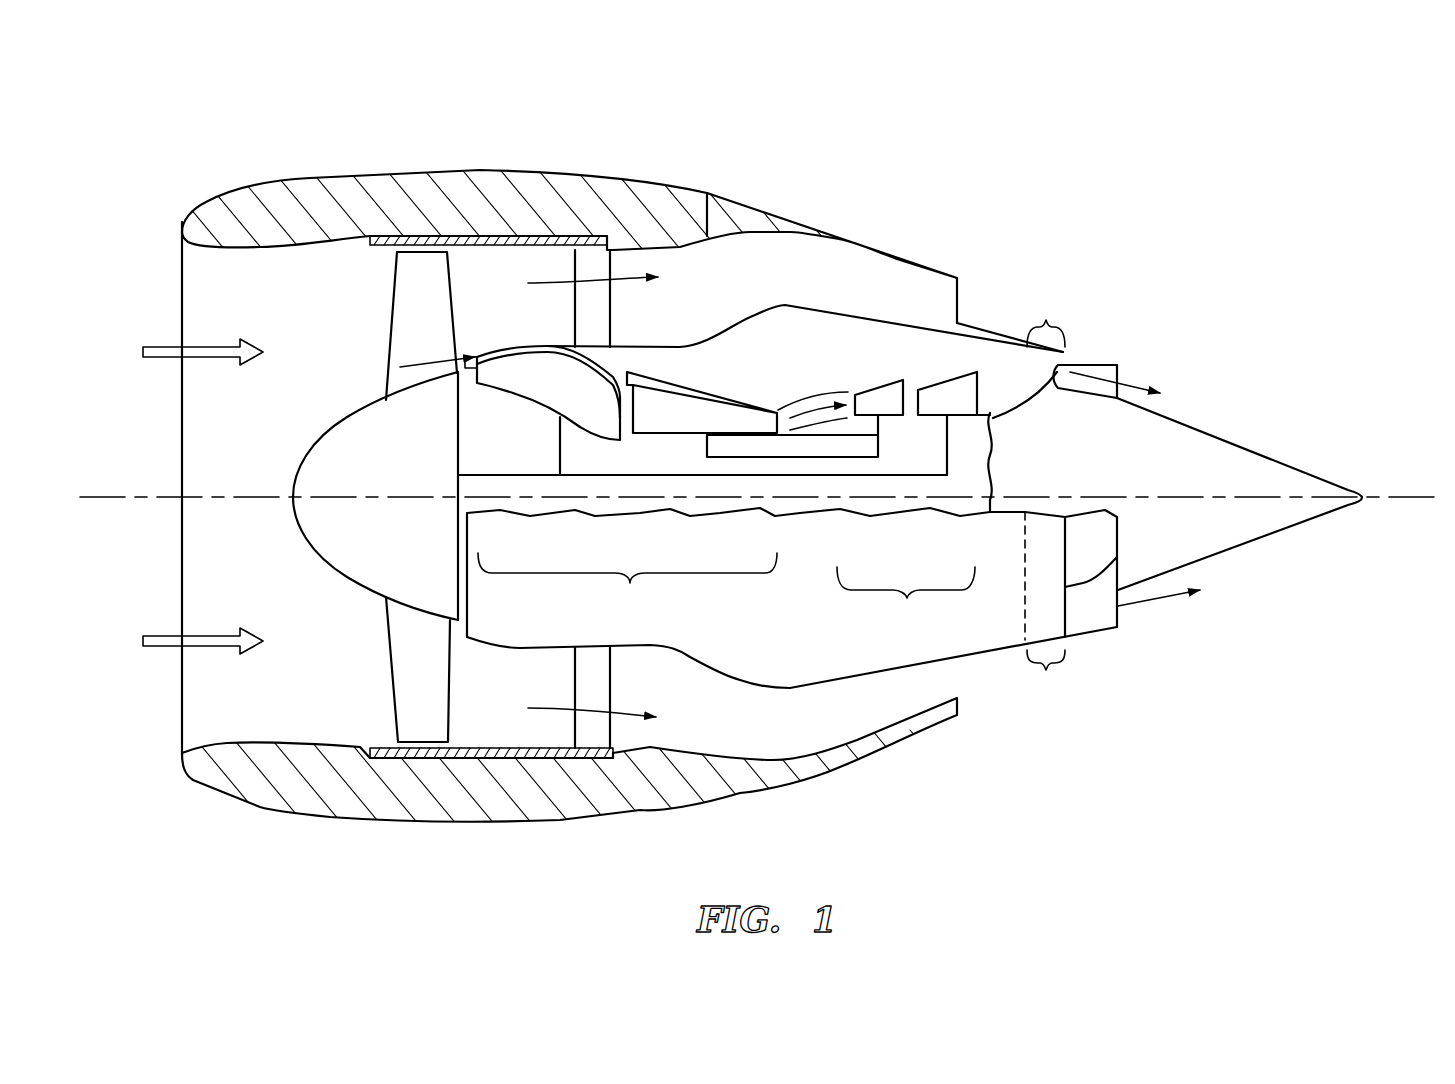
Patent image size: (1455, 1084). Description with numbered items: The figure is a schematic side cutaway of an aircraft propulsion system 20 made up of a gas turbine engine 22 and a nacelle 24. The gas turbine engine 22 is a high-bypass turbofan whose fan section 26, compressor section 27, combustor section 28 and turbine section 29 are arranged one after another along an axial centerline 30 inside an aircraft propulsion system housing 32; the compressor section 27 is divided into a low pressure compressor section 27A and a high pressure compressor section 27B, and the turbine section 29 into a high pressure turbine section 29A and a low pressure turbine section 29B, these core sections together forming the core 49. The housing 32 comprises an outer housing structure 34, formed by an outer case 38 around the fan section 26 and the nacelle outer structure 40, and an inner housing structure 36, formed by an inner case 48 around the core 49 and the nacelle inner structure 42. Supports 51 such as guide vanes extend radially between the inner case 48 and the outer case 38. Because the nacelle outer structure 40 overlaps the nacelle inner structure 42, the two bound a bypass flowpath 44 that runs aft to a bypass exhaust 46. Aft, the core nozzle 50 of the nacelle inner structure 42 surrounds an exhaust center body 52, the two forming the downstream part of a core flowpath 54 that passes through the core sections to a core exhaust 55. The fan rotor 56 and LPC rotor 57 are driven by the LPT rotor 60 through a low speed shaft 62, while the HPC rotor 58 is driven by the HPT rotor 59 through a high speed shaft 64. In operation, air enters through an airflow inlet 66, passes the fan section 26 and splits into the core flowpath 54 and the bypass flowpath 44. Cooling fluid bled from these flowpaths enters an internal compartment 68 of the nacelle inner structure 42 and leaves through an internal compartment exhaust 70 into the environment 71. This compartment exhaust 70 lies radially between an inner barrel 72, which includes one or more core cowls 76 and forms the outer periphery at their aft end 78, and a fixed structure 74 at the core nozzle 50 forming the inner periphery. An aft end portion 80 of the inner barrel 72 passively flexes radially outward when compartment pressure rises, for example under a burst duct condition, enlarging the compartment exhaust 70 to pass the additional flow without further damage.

The aircraft propulsion system 20 is at (193, 157).
The gas turbine engine 22 is at (290, 427).
The nacelle 24 is at (487, 168).
The fan section 26 is at (363, 720).
The compressor section 27 is at (627, 585).
The low pressure compressor (LPC) section 27A is at (540, 362).
The high pressure compressor (HPC) section 27B is at (707, 372).
The combustor section 28 is at (830, 440).
The turbine section 29 is at (906, 602).
The high pressure turbine (HPT) section 29A is at (887, 362).
The low pressure turbine (LPT) section 29B is at (958, 353).
The axial centerline 30 is at (1423, 498).
The aircraft propulsion system housing 32 is at (592, 820).
The outer housing structure 34 is at (479, 833).
The inner housing structure 36 is at (846, 697).
The outer case 38 is at (398, 237).
The nacelle outer structure 40 is at (430, 172).
The nacelle inner structure 42 is at (827, 310).
The bypass flowpath 44 is at (633, 331).
The bypass exhaust 46 is at (963, 698).
The inner case 48 is at (773, 400).
The core 49 is at (803, 372).
The core nozzle 50 is at (1090, 623).
The supports 51 is at (613, 267).
The exhaust center body 52 is at (1230, 556).
The core flowpath 54 is at (988, 397).
The core exhaust 55 is at (1118, 375).
The fan rotor 56 is at (367, 595).
The LPC rotor 57 is at (513, 397).
The HPC rotor 58 is at (660, 434).
The HPT rotor 59 is at (945, 417).
The LPT rotor 60 is at (993, 437).
The low speed shaft 62 is at (895, 418).
The high speed shaft 64 is at (742, 458).
The airflow inlet 66 is at (182, 287).
The internal compartment 68 is at (822, 361).
The internal compartment exhaust 70 is at (1088, 357).
The environment 71 is at (1280, 313).
The inner barrel 72 is at (932, 323).
The fixed structure 74 is at (1067, 388).
The core cowls 76 is at (980, 337).
The aft end 78 is at (1067, 352).
The aft end portion 80 is at (1046, 494).